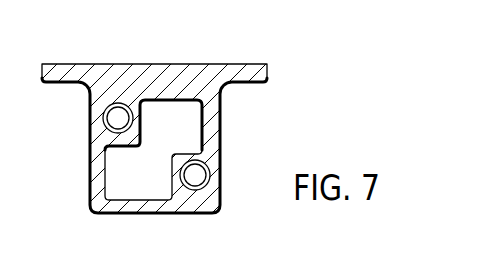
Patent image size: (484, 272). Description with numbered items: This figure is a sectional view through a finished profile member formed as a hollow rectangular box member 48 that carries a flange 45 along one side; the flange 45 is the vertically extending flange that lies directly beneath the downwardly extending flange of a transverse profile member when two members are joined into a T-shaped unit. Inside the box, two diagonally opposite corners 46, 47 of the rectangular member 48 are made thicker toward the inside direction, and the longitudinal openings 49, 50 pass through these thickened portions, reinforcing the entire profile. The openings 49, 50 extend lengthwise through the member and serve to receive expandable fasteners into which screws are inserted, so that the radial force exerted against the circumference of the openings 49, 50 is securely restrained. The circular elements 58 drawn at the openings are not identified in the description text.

The flange 45 is at (232, 72).
The corner 46 is at (140, 108).
The corner 47 is at (175, 168).
The hollow rectangular box member 48 is at (213, 127).
The longitudinal opening 49 is at (116, 120).
The longitudinal opening 50 is at (193, 180).
The bushing 58 is at (106, 107).